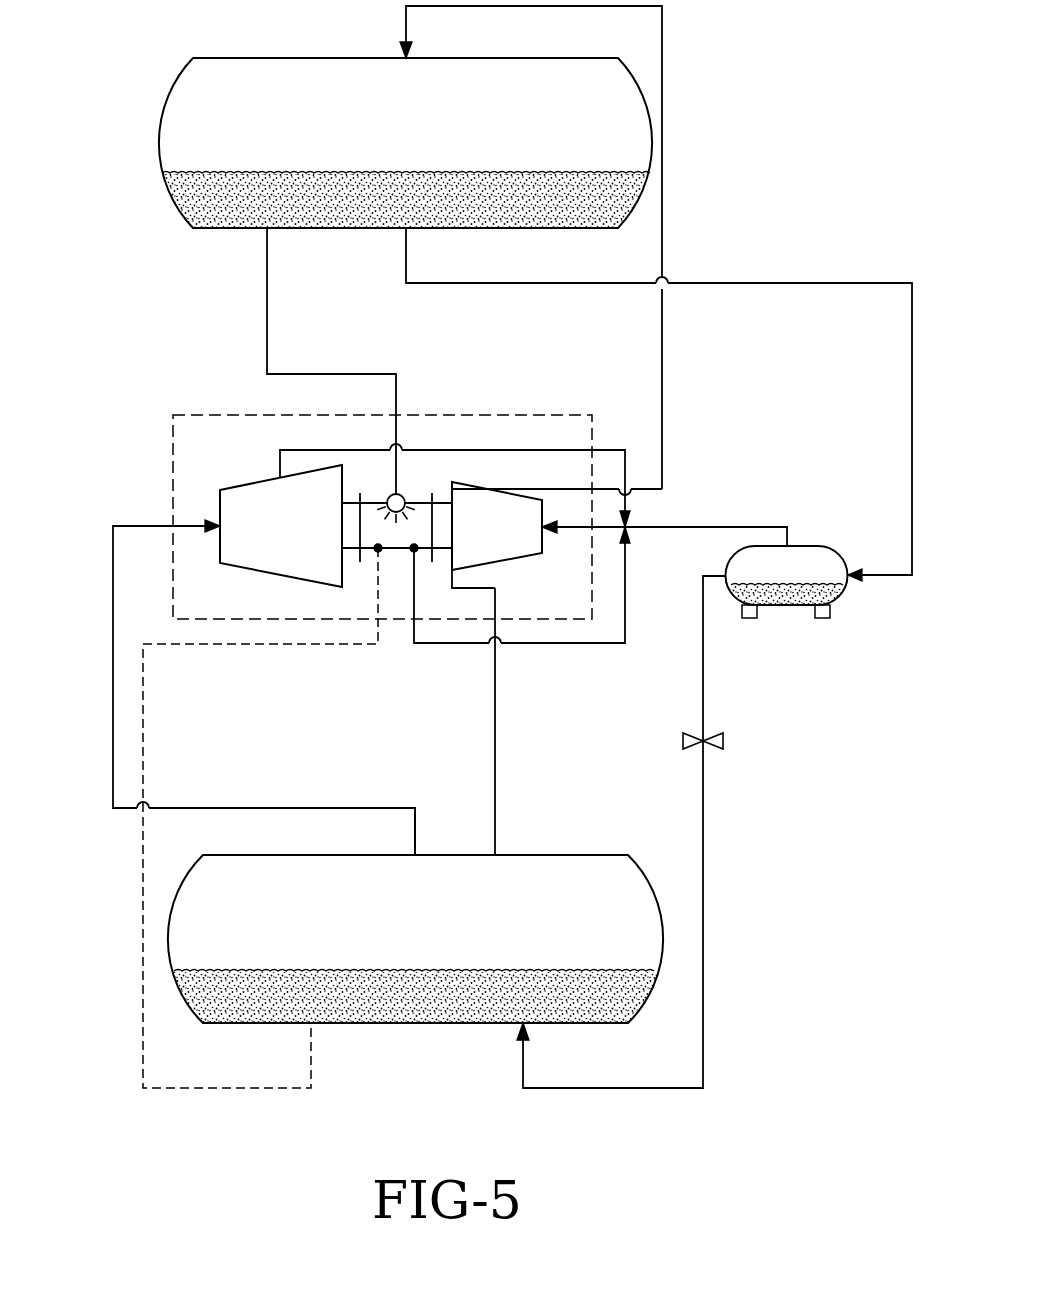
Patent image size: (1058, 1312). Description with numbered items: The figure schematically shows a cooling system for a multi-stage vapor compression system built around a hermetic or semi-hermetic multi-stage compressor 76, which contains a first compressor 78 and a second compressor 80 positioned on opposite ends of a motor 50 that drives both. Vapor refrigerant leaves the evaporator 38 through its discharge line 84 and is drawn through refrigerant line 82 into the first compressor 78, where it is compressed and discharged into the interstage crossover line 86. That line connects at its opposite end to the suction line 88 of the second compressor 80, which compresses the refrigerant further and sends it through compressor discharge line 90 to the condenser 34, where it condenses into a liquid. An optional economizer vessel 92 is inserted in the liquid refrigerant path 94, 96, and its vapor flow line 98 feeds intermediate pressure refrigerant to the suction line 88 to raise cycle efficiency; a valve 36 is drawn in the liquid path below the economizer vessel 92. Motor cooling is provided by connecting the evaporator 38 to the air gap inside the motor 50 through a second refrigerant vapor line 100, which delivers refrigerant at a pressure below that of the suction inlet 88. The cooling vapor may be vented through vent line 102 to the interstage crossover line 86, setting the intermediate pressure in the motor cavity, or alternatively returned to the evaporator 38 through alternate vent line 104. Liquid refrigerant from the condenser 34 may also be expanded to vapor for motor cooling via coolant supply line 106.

The condenser 34 is at (388, 136).
The evaporator 38 is at (399, 931).
The valve 36 is at (723, 741).
The motor 50 is at (420, 518).
The multi-stage compressor 76 is at (173, 447).
The first compressor 78 is at (262, 543).
The second compressor 80 is at (479, 545).
The refrigerant line 82 is at (113, 605).
The discharge line 84 is at (416, 853).
The interstage crossover line 86 is at (473, 448).
The suction line 88 is at (545, 529).
The compressor discharge line 90 is at (662, 342).
The economizer vessel 92 is at (818, 547).
The liquid refrigerant path 94 is at (912, 428).
The liquid refrigerant path 96 is at (703, 680).
The vapor flow line 98 is at (712, 527).
The second refrigerant vapor line 100 is at (495, 720).
The vent line 102 is at (565, 645).
The alternate vent line 104 is at (199, 1088).
The coolant supply line 106 is at (267, 312).